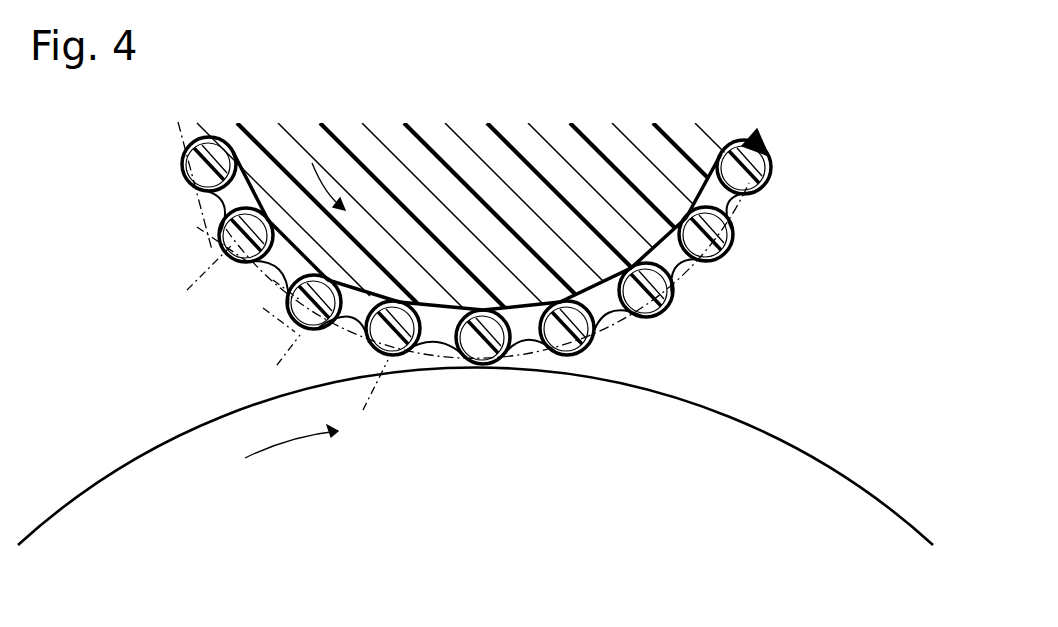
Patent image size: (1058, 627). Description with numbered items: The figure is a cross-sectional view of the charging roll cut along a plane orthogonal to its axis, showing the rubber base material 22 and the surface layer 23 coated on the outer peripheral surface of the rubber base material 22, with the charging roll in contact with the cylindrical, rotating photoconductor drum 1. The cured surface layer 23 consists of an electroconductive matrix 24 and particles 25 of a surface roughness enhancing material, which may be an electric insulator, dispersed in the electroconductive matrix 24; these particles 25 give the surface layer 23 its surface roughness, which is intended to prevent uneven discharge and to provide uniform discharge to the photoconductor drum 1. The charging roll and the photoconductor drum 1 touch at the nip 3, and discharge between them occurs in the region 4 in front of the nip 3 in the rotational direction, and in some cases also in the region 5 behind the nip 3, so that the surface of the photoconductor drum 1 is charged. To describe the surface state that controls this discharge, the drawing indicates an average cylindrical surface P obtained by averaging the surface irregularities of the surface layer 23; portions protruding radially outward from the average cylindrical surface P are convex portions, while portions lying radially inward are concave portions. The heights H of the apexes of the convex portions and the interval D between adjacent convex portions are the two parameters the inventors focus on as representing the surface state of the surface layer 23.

The photoconductor drum 1 is at (107, 502).
The nip 3 is at (475, 369).
The region in front of the nip 4 is at (402, 369).
The region behind the nip 5 is at (540, 368).
The rubber base material 22 is at (771, 168).
The surface layer 23 is at (712, 258).
The electroconductive matrix 24 is at (733, 197).
The particles of surface roughness enhancing material 25 is at (600, 333).
The average cylindrical surface P is at (180, 135).
The height of convex portion H is at (297, 260).
The interval between convex portions D is at (370, 402).